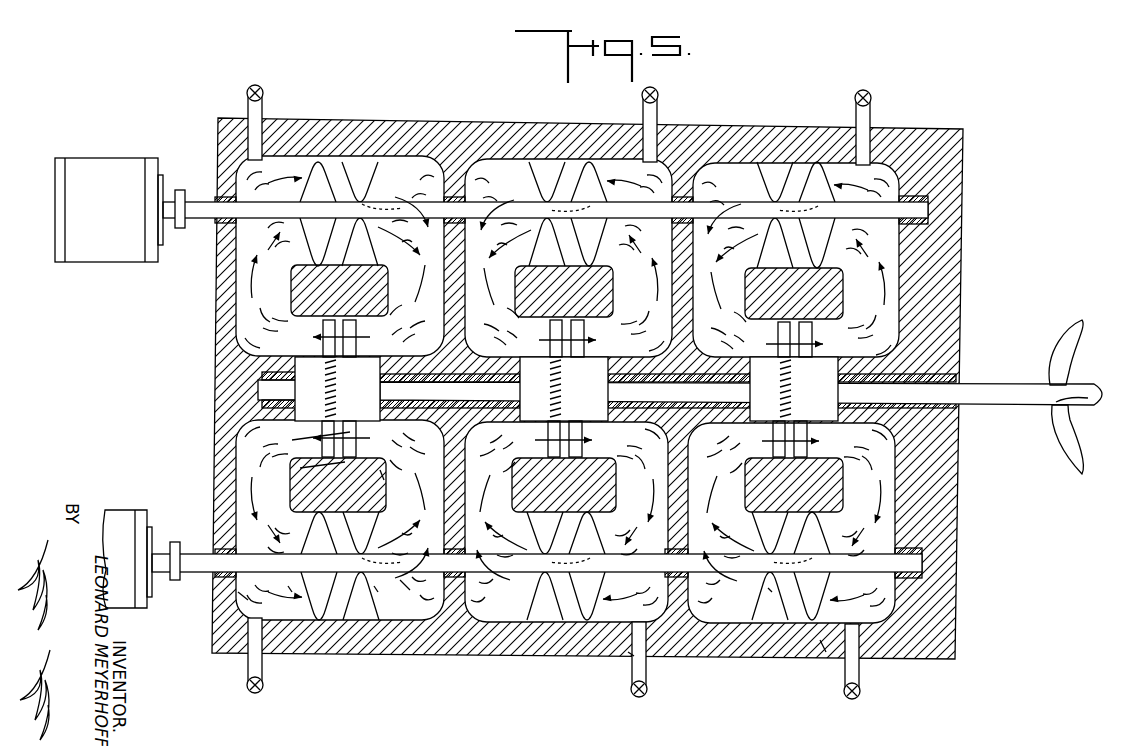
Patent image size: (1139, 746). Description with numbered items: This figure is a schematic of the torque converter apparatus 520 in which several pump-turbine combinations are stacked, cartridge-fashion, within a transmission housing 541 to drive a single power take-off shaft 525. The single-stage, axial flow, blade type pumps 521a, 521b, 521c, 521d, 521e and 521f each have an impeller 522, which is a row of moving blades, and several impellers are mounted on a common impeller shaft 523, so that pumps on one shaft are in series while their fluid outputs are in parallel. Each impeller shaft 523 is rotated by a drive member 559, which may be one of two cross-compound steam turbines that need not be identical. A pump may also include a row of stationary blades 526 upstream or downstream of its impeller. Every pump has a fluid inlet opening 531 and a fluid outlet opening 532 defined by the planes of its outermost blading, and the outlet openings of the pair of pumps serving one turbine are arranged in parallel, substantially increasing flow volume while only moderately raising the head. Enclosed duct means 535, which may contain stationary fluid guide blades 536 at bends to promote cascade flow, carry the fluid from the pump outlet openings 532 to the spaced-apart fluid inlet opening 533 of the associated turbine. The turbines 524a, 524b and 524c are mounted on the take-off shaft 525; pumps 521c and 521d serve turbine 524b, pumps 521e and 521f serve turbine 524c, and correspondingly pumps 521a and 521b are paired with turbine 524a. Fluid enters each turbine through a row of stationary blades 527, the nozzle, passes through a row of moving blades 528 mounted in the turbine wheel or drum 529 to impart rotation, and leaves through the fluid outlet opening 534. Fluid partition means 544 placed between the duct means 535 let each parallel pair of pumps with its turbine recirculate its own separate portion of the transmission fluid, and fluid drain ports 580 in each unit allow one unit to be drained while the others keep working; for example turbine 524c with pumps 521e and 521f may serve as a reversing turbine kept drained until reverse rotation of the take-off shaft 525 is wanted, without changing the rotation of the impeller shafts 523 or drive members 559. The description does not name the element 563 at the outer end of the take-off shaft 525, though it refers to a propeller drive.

The torque converter apparatus 520 is at (883, 126).
The pump 521a is at (332, 595).
The pump 521b is at (333, 170).
The pump 521c is at (580, 172).
The pump 521d is at (567, 600).
The pump 521e is at (802, 172).
The pump 521f is at (792, 600).
The impeller 522 is at (822, 640).
The impeller shaft 523 is at (193, 200).
The turbine 524a is at (300, 406).
The turbine 524b is at (546, 416).
The turbine 524c is at (764, 412).
The power take-off shaft 525 is at (1006, 390).
The stationary blades 526 is at (770, 588).
The stationary blades 527 is at (768, 345).
The moving blades 528 is at (585, 388).
The turbine wheel or drum 529 is at (902, 360).
The fluid inlet opening 531 is at (288, 588).
The fluid outlet opening 532 is at (375, 588).
The fluid inlet opening 533 is at (300, 468).
The fluid outlet opening 534 is at (292, 440).
The duct means 535 is at (381, 476).
The stationary fluid guide blades 536 is at (242, 596).
The transmission housing 541 is at (630, 654).
The fluid partition means 544 is at (402, 590).
The drive member 559 is at (128, 160).
The propeller 563 is at (1080, 336).
The fluid drain port 580 is at (264, 96).